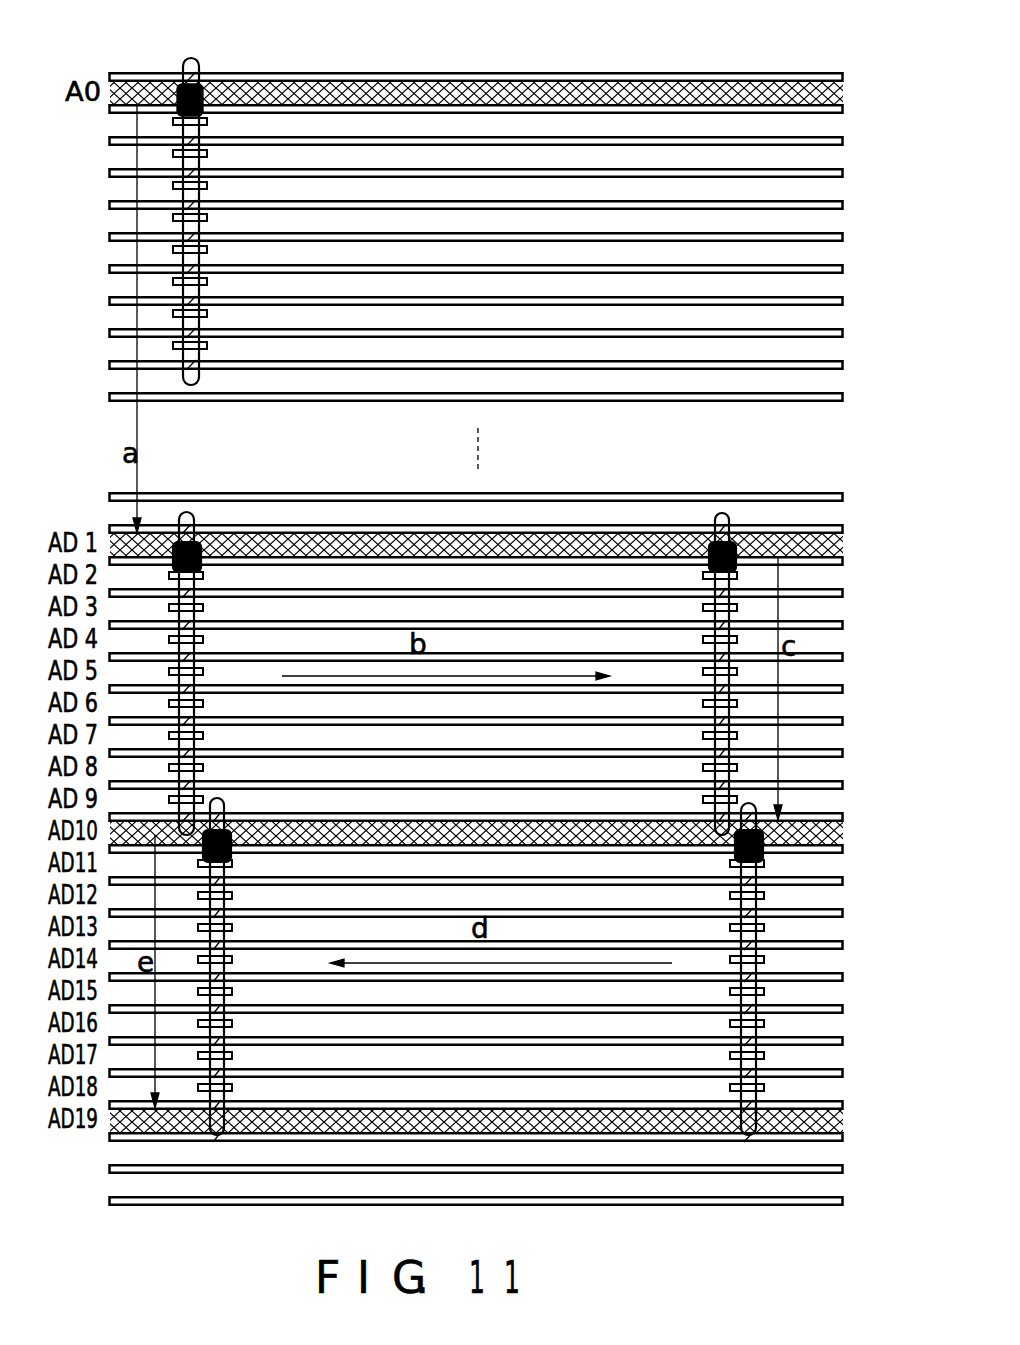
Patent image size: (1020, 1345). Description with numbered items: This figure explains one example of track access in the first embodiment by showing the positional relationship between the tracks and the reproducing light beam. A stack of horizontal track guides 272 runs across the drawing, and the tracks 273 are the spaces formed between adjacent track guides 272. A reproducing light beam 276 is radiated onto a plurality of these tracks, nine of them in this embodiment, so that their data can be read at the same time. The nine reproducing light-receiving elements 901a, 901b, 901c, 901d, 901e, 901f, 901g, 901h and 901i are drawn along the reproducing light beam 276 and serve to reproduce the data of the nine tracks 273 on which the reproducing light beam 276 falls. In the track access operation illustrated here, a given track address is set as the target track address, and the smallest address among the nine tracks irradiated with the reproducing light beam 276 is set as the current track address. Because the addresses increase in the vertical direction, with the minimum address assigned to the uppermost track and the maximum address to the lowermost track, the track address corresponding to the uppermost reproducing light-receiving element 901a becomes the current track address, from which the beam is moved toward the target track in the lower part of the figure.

The track guide 272 is at (844, 77).
The track 273 is at (842, 92).
The reproducing light beam 276 is at (188, 60).
The reproducing light-receiving element 901a is at (203, 92).
The reproducing light-receiving element 901b is at (207, 121).
The reproducing light-receiving element 901c is at (207, 153).
The reproducing light-receiving element 901d is at (207, 186).
The reproducing light-receiving element 901e is at (174, 218).
The reproducing light-receiving element 901f is at (207, 251).
The reproducing light-receiving element 901g is at (207, 283).
The reproducing light-receiving element 901h is at (207, 315).
The reproducing light-receiving element 901i is at (207, 347).